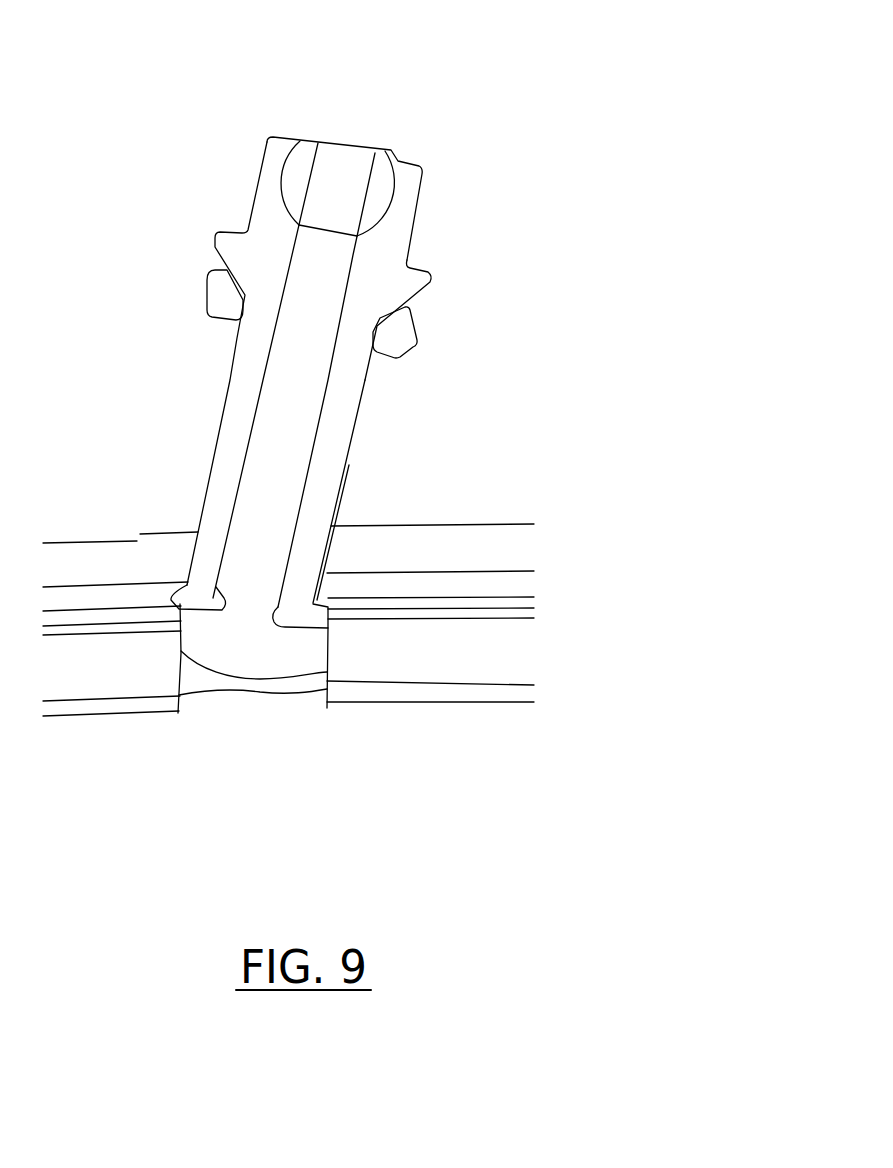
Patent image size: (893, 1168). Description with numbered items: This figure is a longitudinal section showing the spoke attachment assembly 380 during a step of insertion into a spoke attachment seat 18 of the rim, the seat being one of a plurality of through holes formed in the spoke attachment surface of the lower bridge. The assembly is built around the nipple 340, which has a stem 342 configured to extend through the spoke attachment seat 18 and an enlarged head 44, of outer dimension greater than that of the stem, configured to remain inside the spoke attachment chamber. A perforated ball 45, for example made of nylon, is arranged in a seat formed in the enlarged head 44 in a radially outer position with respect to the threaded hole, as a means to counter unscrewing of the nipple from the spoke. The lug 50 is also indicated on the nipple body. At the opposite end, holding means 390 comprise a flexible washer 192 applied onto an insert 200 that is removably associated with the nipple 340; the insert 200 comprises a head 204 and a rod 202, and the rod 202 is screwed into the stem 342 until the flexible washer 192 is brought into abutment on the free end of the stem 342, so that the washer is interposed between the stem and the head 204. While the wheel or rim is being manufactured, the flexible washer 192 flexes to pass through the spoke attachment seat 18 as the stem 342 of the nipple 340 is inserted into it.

The connector assembly 380 is at (480, 78).
The perforated ball 45 is at (300, 163).
The nipple 340 is at (170, 223).
The enlarged head 44 is at (447, 272).
The lug 50 is at (206, 318).
The rod 202 is at (283, 457).
The stem 342 is at (357, 485).
The holding means 390 is at (182, 592).
The flexible washer 192 is at (330, 618).
The insert 200 is at (229, 642).
The head 204 is at (267, 648).
The spoke attachment seat 18 is at (232, 703).